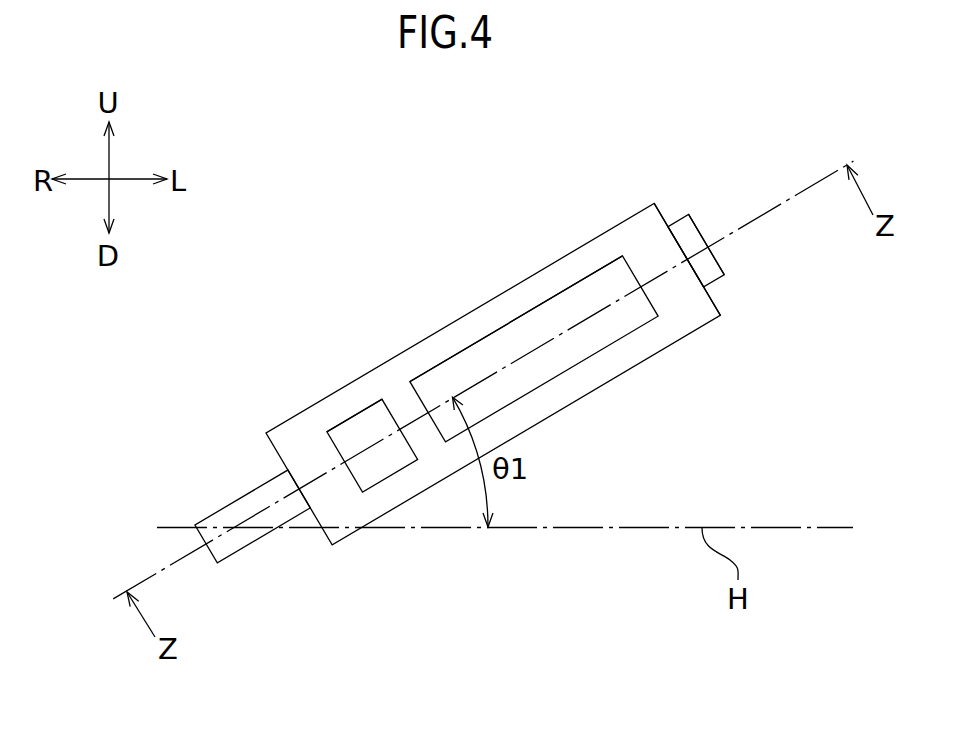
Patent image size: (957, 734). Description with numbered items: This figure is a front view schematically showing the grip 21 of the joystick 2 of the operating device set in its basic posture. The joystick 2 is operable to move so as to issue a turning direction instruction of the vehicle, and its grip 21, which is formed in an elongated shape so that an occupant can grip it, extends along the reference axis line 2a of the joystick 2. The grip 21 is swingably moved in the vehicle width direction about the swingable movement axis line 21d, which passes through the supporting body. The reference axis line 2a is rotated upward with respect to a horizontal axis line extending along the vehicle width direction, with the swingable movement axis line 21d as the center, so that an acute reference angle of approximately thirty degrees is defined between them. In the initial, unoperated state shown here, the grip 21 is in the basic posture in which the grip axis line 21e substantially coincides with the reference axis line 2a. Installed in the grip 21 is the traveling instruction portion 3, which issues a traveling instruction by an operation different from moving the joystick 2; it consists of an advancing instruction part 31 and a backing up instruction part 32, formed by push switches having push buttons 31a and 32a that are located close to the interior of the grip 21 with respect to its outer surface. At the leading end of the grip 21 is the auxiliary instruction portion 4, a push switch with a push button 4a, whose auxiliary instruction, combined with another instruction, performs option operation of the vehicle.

The joystick 2 is at (483, 350).
The reference axis line 2a is at (753, 220).
The grip 21 is at (494, 378).
The swingable movement axis line 21d is at (237, 540).
The grip axis line 21e is at (758, 217).
The traveling instruction portion 3 is at (458, 336).
The advancing instruction part 31 is at (531, 311).
The push button 31a is at (557, 318).
The backing up instruction part 32 is at (338, 382).
The push button 32a is at (352, 438).
The auxiliary instruction portion 4 is at (743, 211).
The push button 4a is at (720, 263).